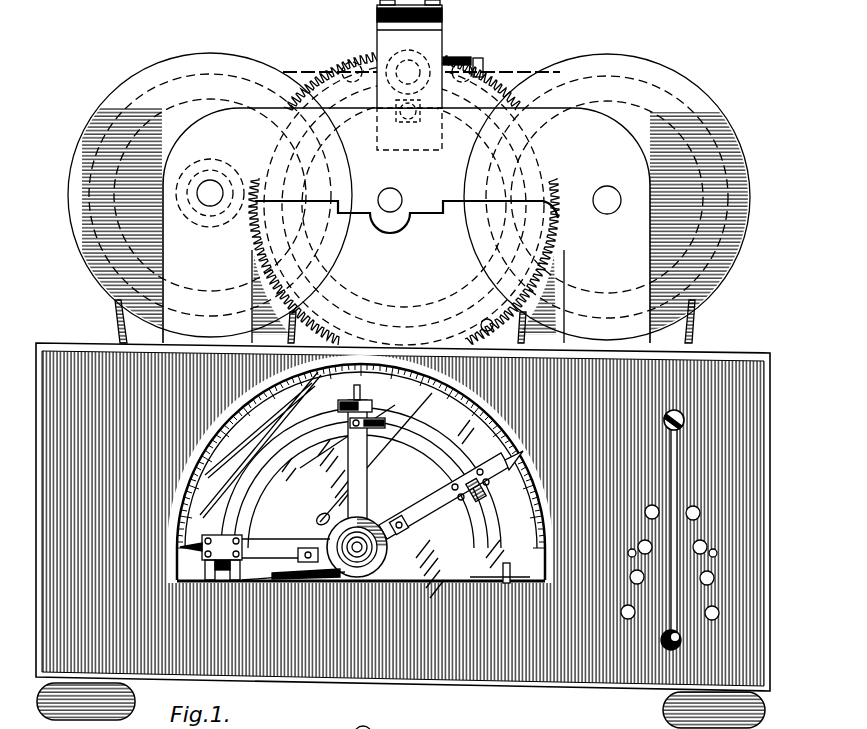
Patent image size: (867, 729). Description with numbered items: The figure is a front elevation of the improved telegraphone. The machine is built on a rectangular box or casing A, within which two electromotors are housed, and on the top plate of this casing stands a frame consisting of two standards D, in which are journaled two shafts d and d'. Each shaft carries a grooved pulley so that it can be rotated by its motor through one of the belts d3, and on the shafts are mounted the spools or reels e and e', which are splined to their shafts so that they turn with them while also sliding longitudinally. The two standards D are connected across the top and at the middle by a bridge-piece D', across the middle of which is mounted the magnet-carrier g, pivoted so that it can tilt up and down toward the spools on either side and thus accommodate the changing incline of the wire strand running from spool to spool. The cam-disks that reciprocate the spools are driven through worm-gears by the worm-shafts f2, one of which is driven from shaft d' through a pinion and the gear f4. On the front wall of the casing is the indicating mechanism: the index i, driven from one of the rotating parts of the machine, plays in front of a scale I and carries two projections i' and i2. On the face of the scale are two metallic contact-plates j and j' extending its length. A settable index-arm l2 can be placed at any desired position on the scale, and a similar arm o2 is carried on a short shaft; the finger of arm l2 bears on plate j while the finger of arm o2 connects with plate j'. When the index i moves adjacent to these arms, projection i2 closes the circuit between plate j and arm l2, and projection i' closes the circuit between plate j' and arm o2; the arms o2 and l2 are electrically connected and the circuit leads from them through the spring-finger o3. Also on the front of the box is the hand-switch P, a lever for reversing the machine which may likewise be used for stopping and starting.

The box or casing A is at (585, 682).
The standards D is at (406, 207).
The bridge-piece D' is at (412, 75).
The spool or reel e' is at (200, 195).
The spool or reel e is at (607, 197).
The shaft d' is at (210, 205).
The shaft d is at (607, 215).
The belts d3 is at (401, 321).
The worm-shaft f2 is at (401, 195).
The gear f4 is at (404, 197).
The magnet-carrier g is at (486, 58).
The scale I is at (360, 469).
The index i is at (357, 460).
The projection i' is at (356, 406).
The projection i2 is at (289, 445).
The metallic contact-plate j is at (366, 457).
The metallic contact-plate j' is at (393, 509).
The index-arm l2 is at (451, 495).
The arm o2 is at (355, 549).
The spring-finger o3 is at (350, 539).
The hand-switch P is at (678, 497).